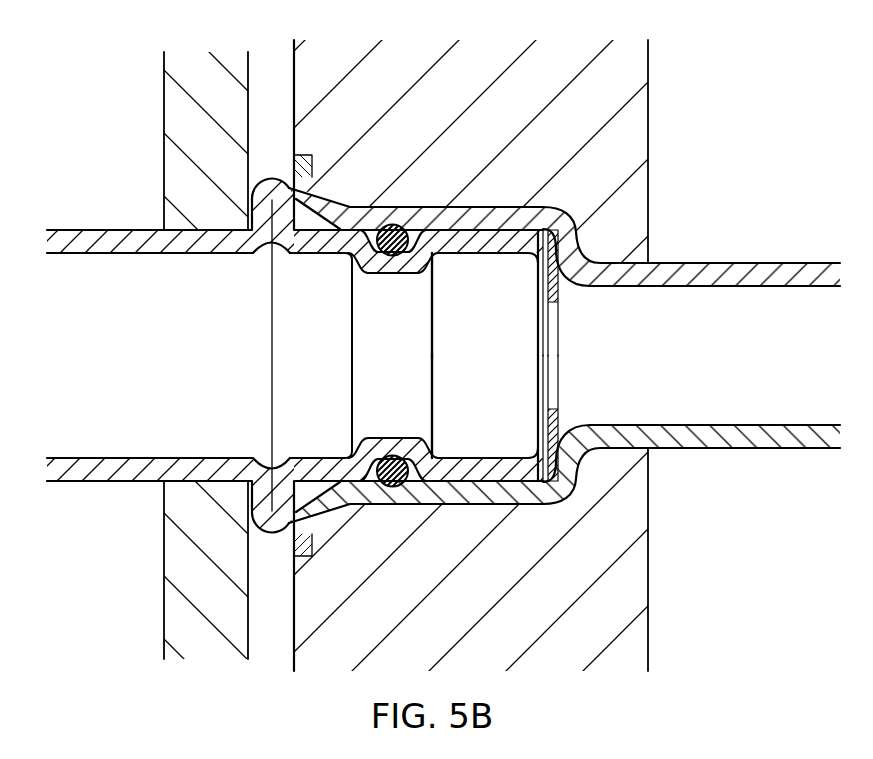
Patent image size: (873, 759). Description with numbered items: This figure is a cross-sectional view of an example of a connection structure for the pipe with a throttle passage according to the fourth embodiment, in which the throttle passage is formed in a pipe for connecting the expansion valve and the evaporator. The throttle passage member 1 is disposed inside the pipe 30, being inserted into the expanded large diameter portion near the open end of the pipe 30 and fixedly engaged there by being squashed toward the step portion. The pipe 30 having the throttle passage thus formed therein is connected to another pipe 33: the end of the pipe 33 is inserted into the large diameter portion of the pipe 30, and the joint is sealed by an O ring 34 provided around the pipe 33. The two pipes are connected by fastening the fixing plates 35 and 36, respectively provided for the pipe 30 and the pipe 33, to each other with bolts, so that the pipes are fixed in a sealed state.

The throttle passage member 1 is at (559, 330).
The pipe 30 is at (801, 262).
The pipe 33 is at (90, 229).
The O ring 34 is at (393, 483).
The fixing plate 35 is at (648, 121).
The fixing plate 36 is at (163, 93).